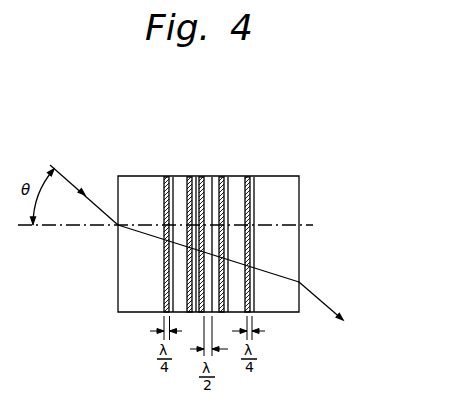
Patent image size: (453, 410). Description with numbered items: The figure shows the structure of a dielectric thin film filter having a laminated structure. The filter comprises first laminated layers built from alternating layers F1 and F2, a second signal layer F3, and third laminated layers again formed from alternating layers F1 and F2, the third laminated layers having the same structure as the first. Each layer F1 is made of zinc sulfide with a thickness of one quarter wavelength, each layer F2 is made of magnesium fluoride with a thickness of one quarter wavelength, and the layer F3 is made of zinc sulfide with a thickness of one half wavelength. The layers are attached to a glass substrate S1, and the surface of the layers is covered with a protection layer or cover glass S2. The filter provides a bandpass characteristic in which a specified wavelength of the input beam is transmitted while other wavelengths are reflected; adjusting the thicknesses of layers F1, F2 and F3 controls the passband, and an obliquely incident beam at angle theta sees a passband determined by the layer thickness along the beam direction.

The layer F1 is at (278, 147).
The layer F2 is at (307, 155).
The second signal layer F3 is at (222, 203).
The glass substrate S1 is at (273, 294).
The protection layer or cover glass S2 is at (132, 263).